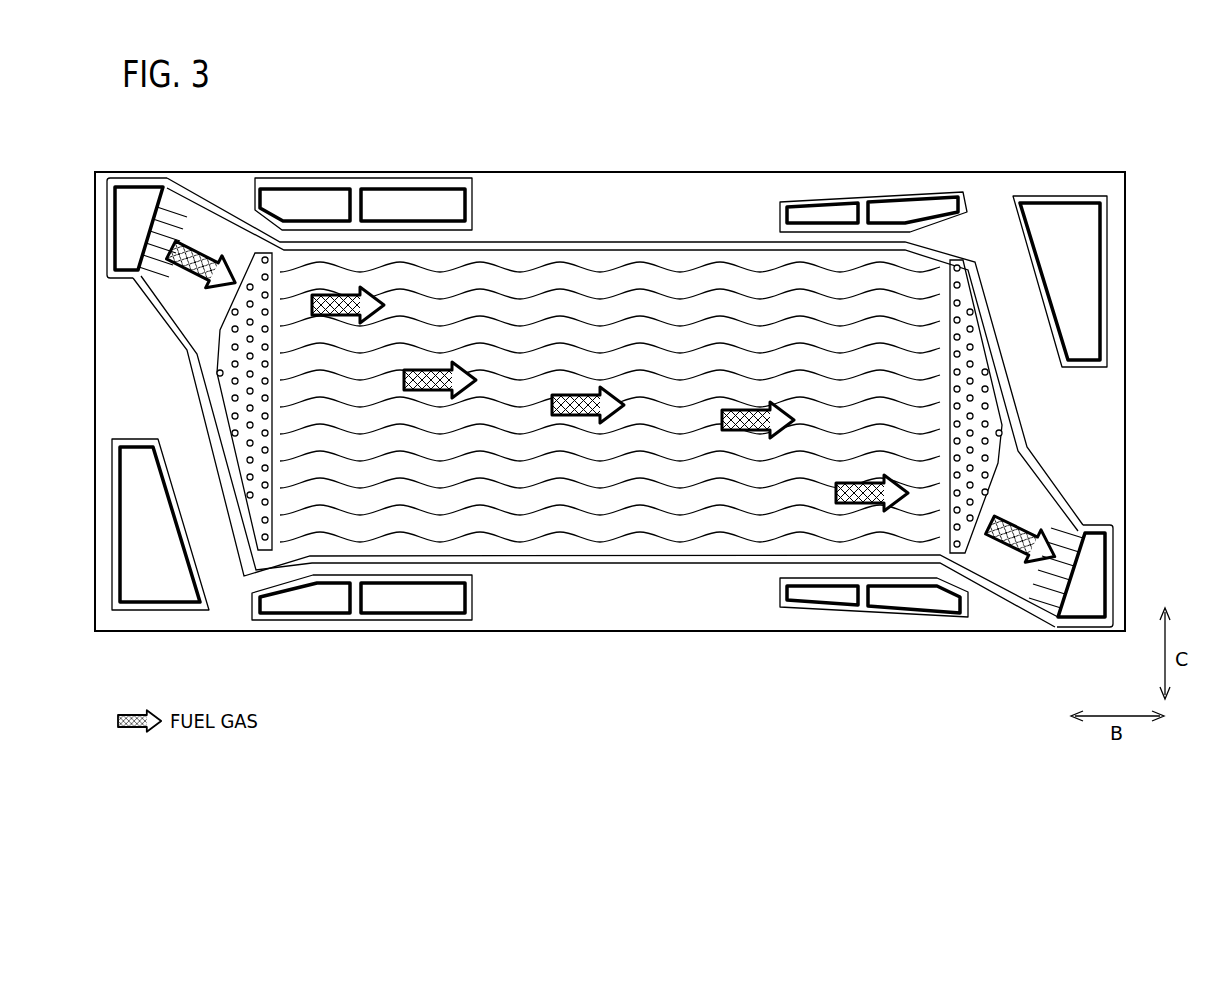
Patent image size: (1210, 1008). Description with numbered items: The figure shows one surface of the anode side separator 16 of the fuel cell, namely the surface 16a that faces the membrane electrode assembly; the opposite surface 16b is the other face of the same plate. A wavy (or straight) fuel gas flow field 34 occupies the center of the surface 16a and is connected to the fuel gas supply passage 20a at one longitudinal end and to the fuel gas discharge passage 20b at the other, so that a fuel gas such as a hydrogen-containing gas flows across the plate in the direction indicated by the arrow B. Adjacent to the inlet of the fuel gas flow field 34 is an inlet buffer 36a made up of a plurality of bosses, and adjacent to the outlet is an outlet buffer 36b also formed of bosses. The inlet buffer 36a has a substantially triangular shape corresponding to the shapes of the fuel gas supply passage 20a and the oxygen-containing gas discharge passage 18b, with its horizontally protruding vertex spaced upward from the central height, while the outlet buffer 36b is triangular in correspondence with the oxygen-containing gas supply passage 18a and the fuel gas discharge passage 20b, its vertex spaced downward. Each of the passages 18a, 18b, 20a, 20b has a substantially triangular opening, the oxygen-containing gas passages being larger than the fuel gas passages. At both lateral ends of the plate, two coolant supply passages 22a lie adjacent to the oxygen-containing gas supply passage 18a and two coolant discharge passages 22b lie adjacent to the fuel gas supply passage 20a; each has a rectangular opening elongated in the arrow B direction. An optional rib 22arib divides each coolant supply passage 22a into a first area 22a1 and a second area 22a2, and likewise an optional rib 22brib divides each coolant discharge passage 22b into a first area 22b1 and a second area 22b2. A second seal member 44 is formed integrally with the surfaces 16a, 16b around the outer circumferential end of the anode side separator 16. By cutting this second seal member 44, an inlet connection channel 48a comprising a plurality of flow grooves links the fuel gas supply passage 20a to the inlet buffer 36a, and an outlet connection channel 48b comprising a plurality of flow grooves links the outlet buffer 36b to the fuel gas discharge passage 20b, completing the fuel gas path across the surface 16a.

The anode side separator 16 is at (277, 97).
The surface of the anode side separator 16a is at (611, 612).
The surface of the anode side separator 16b is at (557, 612).
The oxygen-containing gas supply passage 18a is at (1062, 212).
The oxygen-containing gas discharge passage 18b is at (144, 590).
The fuel gas supply passage 20a is at (127, 207).
The fuel gas discharge passage 20b is at (1085, 600).
The coolant supply passage 22a is at (856, 405).
The first area 22a1 is at (910, 210).
The second area 22a2 is at (835, 215).
The rib 22arib is at (864, 224).
The coolant discharge passage 22b is at (362, 403).
The first area 22b1 is at (317, 205).
The second area 22b2 is at (395, 205).
The rib 22brib is at (356, 222).
The fuel gas flow field 34 is at (606, 295).
The inlet buffer 36a is at (222, 402).
The outlet buffer 36b is at (1000, 410).
The second seal member 44 is at (537, 241).
The inlet connection channel 48a is at (158, 268).
The outlet connection channel 48b is at (1058, 535).